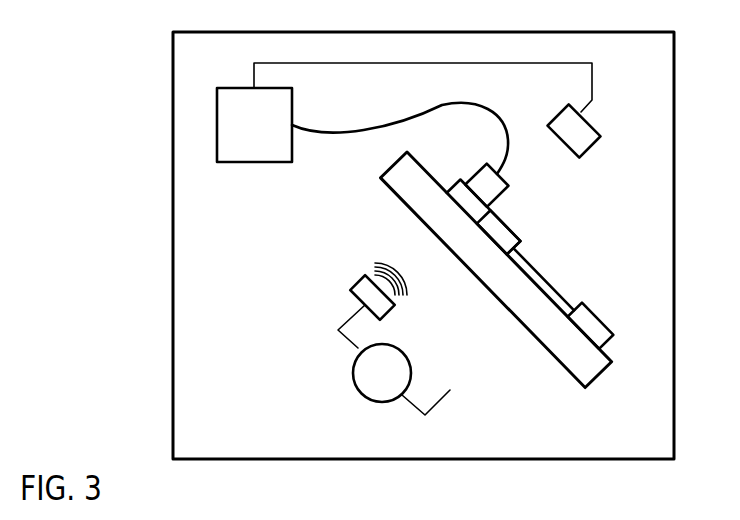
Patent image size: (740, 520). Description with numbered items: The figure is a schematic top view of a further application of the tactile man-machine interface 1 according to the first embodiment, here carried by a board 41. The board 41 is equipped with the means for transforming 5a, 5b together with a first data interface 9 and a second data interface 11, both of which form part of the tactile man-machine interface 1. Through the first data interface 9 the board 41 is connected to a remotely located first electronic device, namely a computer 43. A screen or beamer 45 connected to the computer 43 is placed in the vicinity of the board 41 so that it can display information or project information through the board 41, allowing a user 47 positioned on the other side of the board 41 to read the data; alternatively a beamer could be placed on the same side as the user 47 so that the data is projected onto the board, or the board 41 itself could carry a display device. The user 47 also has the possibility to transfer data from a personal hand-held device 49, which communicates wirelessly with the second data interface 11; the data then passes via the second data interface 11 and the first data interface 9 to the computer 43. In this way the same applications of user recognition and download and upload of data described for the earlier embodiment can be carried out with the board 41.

The computer 43 is at (241, 163).
The screen or beamer 45 is at (590, 121).
The board 41 is at (496, 296).
The tactile man-machine interface 1 is at (558, 360).
The second data interface 11 is at (454, 185).
The means for transforming 5b is at (512, 232).
The means for transforming 5a is at (593, 312).
The first data interface 9 is at (510, 184).
The personal hand-held device 49 is at (356, 283).
The user 47 is at (361, 394).